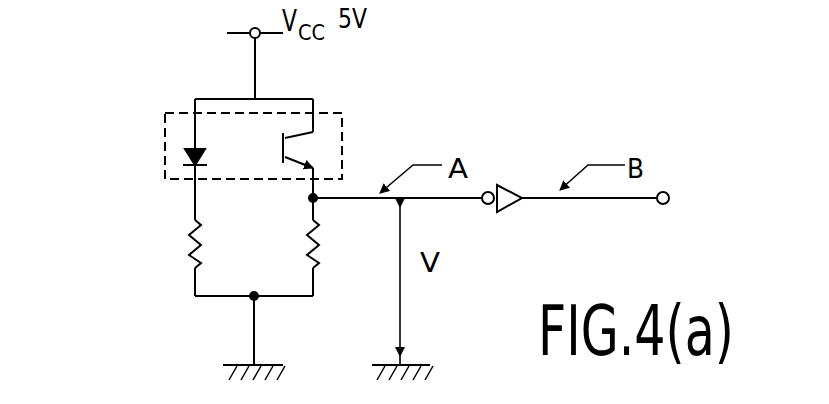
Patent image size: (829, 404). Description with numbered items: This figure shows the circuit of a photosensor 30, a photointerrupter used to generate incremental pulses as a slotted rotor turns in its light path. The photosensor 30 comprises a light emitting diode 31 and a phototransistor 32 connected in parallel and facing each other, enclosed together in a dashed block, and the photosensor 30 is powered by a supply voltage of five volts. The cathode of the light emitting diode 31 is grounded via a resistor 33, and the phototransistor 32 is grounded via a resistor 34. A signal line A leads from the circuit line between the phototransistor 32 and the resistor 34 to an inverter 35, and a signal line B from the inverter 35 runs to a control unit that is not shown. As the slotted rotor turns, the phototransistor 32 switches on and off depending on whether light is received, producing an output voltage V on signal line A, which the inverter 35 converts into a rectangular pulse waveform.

The photosensor 30 is at (350, 105).
The light emitting diode 31 is at (178, 162).
The phototransistor 32 is at (310, 152).
The resistor 33 is at (185, 243).
The resistor 34 is at (325, 245).
The inverter 35 is at (512, 183).